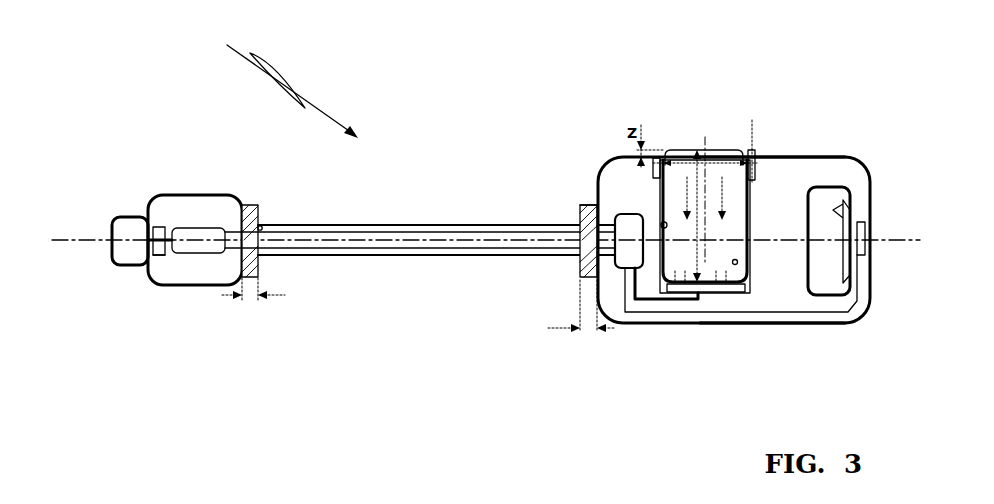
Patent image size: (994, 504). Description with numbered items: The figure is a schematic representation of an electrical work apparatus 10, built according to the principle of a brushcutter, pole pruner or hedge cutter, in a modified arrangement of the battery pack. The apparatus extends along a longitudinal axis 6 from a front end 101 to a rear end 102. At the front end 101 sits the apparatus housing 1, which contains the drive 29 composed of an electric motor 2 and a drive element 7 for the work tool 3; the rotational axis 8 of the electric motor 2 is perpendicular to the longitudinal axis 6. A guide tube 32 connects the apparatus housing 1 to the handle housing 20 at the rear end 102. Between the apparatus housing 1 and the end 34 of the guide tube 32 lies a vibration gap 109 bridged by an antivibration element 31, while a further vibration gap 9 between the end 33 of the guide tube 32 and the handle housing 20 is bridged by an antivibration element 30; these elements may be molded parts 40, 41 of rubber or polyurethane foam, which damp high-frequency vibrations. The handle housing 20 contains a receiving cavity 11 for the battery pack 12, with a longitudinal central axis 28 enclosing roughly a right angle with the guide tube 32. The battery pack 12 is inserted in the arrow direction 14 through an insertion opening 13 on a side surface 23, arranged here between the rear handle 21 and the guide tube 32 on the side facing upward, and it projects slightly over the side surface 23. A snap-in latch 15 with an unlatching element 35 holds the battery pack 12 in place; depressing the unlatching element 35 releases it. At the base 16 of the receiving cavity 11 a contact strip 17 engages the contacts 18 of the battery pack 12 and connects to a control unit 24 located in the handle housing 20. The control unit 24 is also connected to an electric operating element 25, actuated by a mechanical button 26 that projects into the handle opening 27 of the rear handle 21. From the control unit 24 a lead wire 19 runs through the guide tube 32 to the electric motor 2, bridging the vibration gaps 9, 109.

The apparatus housing 1 is at (155, 217).
The electric motor 2 is at (199, 240).
The work tool 3 is at (120, 258).
The longitudinal axis 6 is at (62, 244).
The drive element 7 is at (161, 228).
The rotational axis 8 is at (163, 256).
The vibration gap 9 is at (585, 297).
The electrical work apparatus 10 is at (279, 77).
The receiving cavity 11 is at (661, 222).
The battery pack 12 is at (739, 263).
The insertion opening 13 is at (688, 160).
The arrow direction 14 is at (683, 190).
The snap-in latch 15 is at (656, 157).
The base 16 is at (678, 300).
The contact strip 17 is at (709, 285).
The contacts 18 is at (729, 281).
The lead wire 19 is at (413, 233).
The handle housing 20 is at (822, 323).
The rear handle 21 is at (858, 318).
The side surface 23 is at (797, 156).
The control unit 24 is at (641, 272).
The electric operating element 25 is at (866, 249).
The mechanical button 26 is at (840, 210).
The handle opening 27 is at (805, 283).
The longitudinal central axis 28 is at (705, 137).
The drive 29 is at (176, 270).
The antivibration element 30 is at (585, 204).
The antivibration element 31 is at (252, 208).
The guide tube 32 is at (428, 256).
The end of the guide tube 33 is at (578, 230).
The end of the guide tube 34 is at (262, 227).
The unlatching element 35 is at (711, 141).
The molded part 40 is at (591, 325).
The molded part 41 is at (250, 292).
The front end 101 is at (114, 189).
The rear end 102 is at (891, 158).
The vibration gap 109 is at (242, 300).